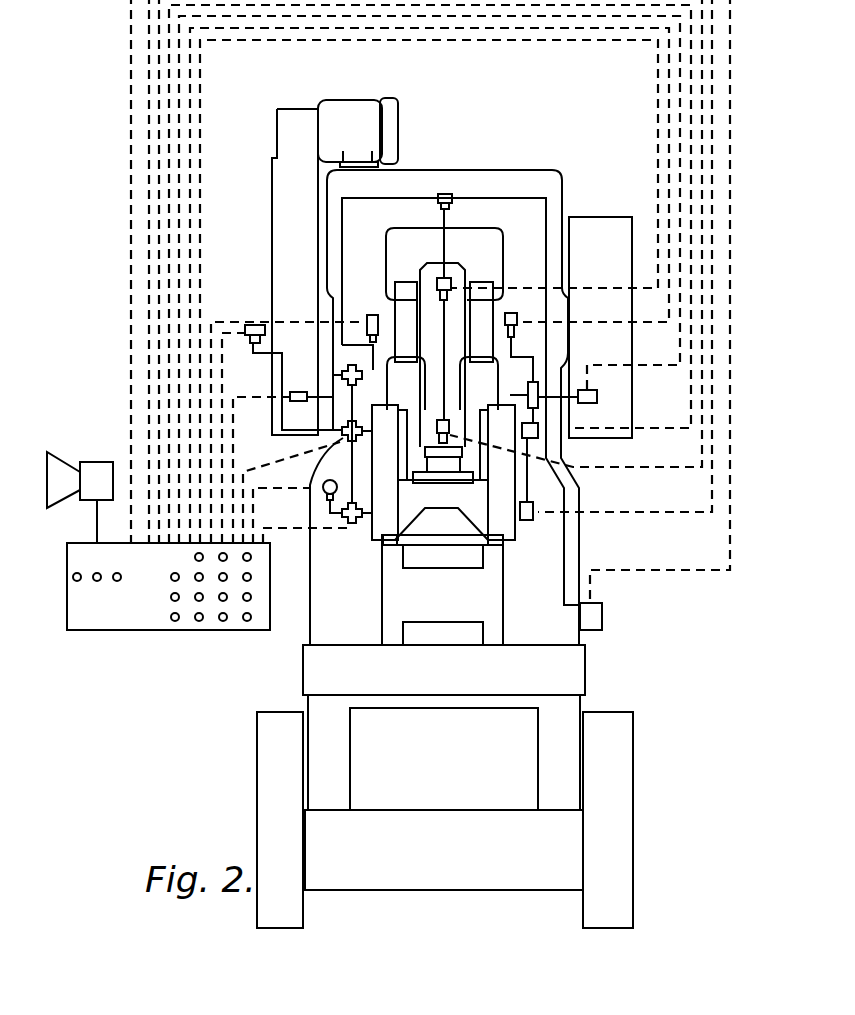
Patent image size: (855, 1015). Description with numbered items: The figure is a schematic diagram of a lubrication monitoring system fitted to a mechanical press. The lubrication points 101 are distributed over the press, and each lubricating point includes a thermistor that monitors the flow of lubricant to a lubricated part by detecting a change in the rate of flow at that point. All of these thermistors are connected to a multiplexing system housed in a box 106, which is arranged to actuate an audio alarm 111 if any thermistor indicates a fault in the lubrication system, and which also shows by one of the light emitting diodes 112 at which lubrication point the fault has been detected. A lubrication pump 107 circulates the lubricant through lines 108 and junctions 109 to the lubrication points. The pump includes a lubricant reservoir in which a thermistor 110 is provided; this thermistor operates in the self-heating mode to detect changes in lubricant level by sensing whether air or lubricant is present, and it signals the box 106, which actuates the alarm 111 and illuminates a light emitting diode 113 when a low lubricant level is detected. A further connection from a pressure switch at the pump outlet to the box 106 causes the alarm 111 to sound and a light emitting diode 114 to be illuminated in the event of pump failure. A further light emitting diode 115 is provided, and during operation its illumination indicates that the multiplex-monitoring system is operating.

The lubrication points 101 is at (360, 318).
The box 106 is at (160, 572).
The lubrication pump 107 is at (603, 620).
The lines 108 is at (535, 406).
The junctions 109 is at (446, 193).
The thermistor 110 is at (591, 601).
The audio alarm 111 is at (95, 462).
The light emitting diodes 112 is at (247, 620).
The light emitting diode 113 is at (118, 584).
The light emitting diode 114 is at (77, 584).
The light emitting diode 115 is at (98, 584).